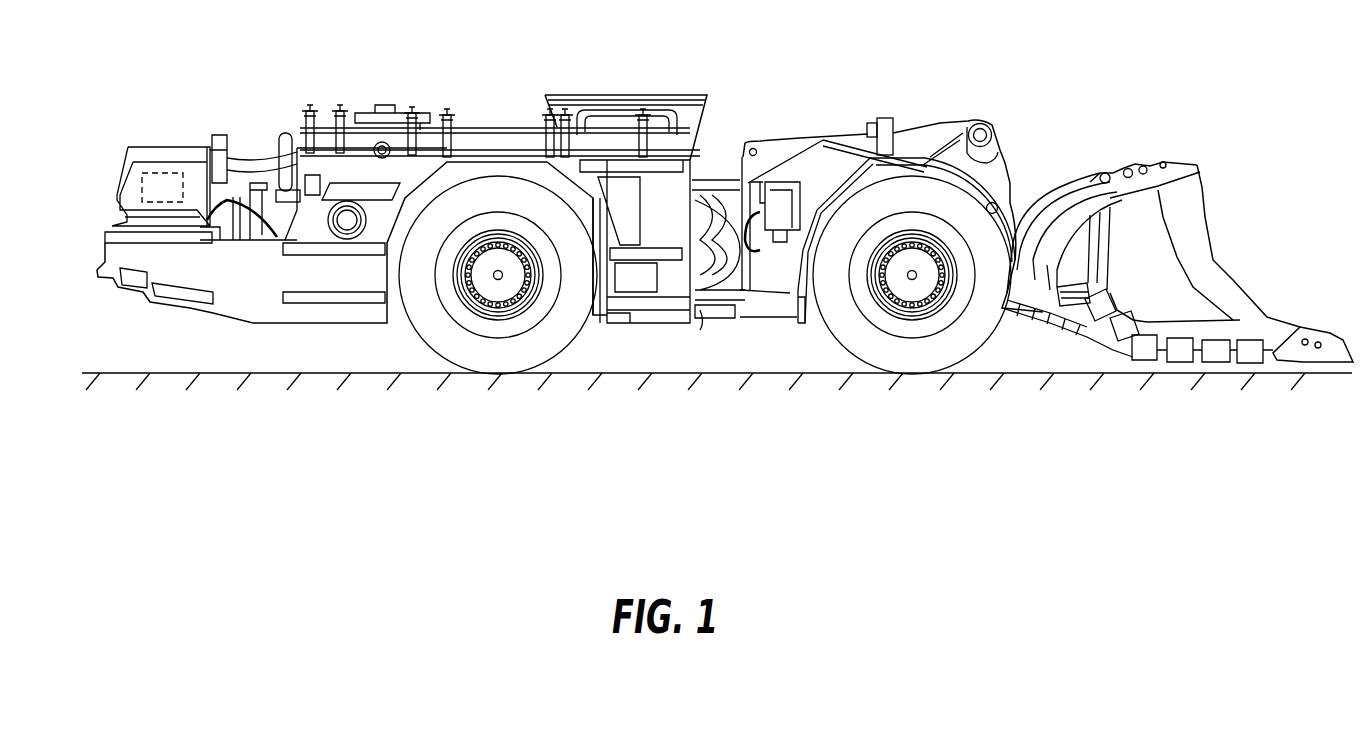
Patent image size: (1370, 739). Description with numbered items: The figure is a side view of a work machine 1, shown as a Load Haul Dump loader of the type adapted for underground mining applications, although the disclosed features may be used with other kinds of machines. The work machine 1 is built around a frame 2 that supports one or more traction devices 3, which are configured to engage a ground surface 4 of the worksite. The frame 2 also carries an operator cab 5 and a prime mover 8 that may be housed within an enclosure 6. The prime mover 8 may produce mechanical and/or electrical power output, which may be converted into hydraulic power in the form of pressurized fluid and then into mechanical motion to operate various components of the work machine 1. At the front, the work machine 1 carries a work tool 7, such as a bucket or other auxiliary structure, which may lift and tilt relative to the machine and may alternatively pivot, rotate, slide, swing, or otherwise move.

The work machine 1 is at (1092, 45).
The frame 2 is at (778, 272).
The traction devices 3 is at (503, 352).
The ground surface 4 is at (1170, 375).
The operator cab 5 is at (625, 95).
The enclosure 6 is at (190, 166).
The work tool 7 is at (1165, 252).
The prime mover 8 is at (142, 187).